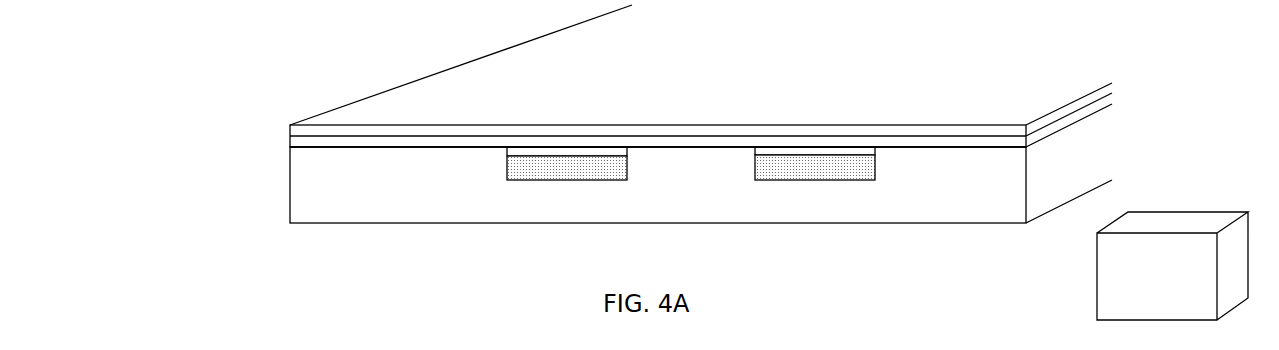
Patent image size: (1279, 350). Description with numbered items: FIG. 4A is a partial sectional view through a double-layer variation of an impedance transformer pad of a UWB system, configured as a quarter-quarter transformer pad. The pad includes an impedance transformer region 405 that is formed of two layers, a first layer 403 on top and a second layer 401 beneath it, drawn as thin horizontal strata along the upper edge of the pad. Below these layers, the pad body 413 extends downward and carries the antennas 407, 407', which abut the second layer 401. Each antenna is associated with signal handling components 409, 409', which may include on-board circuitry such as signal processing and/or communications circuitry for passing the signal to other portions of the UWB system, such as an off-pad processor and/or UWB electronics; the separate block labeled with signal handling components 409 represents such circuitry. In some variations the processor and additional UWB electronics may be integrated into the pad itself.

The second layer 401 is at (290, 146).
The first layer 403 is at (290, 125).
The impedance transformer region 405 is at (268, 126).
The antenna 407 is at (597, 248).
The antenna 407' is at (815, 216).
The signal handling components 409 is at (877, 253).
The signal handling components 409' is at (843, 222).
The substrate body 413 is at (342, 178).